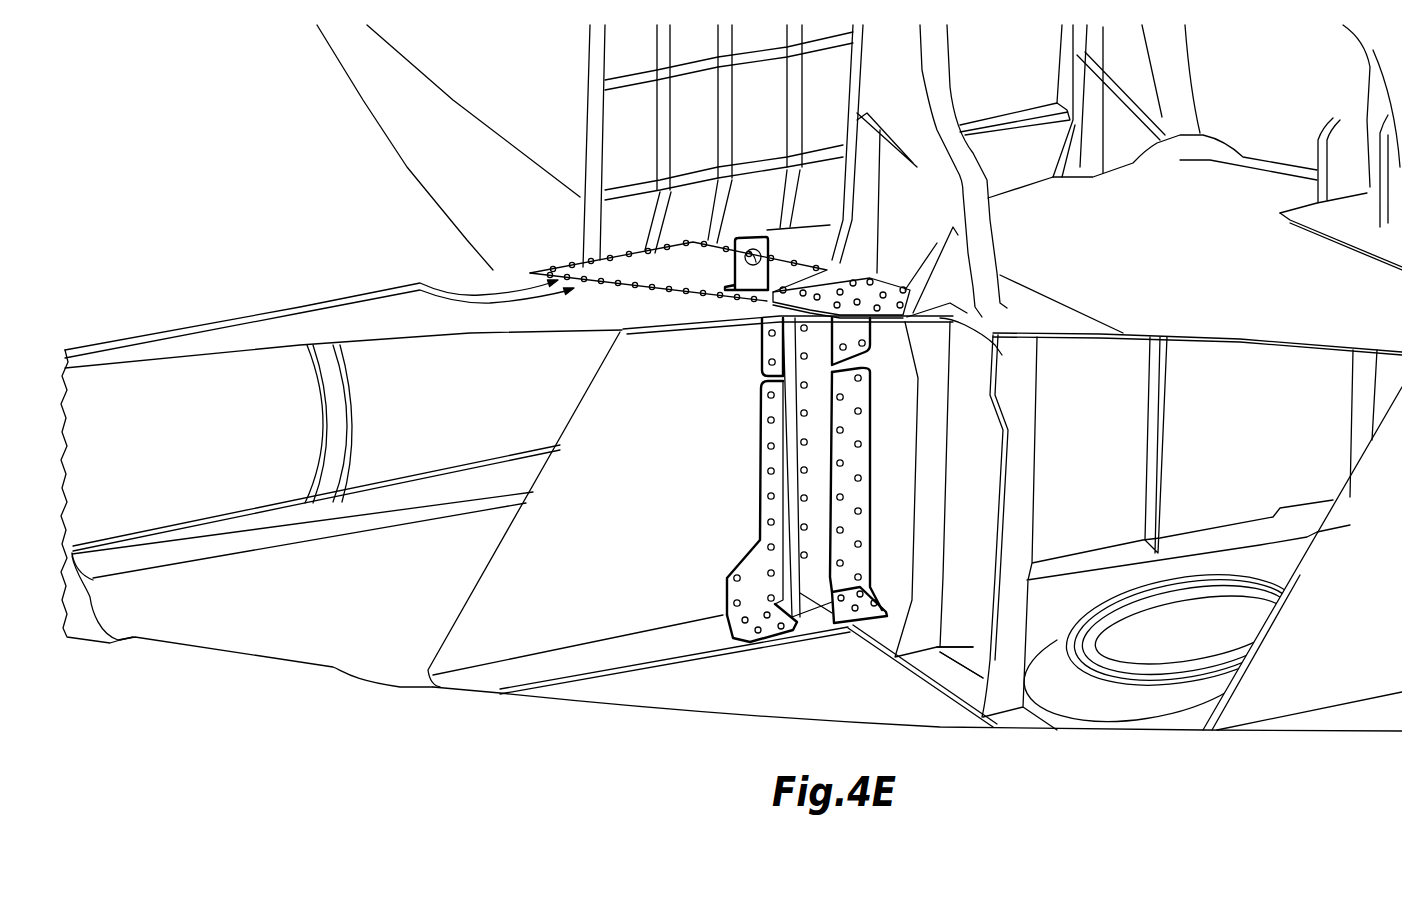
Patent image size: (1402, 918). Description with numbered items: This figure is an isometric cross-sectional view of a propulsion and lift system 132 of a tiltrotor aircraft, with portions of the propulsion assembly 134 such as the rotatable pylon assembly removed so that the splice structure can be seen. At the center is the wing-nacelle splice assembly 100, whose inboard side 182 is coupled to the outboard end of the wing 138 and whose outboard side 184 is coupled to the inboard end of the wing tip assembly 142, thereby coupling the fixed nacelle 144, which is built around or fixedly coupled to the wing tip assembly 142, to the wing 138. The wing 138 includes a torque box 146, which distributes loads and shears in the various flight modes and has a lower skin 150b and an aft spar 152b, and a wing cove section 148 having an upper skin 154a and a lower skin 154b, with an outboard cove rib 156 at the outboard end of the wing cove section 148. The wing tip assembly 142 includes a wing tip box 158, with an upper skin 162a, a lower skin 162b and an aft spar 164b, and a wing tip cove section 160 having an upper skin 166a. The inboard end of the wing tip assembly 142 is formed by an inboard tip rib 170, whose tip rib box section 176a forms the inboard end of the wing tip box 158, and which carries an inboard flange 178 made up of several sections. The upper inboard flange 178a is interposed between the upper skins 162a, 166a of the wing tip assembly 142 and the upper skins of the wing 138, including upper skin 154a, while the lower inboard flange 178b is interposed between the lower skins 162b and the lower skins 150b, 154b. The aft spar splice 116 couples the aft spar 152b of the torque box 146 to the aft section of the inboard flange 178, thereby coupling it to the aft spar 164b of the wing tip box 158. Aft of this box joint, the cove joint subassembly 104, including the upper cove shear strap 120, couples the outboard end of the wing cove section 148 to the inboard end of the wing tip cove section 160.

The wing-nacelle splice assembly 100 is at (530, 273).
The cove joint subassembly 104 is at (440, 287).
The aft spar splice 116 is at (757, 420).
The upper cove shear strap 120 is at (620, 287).
The propulsion and lift system 132 is at (188, 192).
The propulsion assembly 134 is at (320, 46).
The wing 138 is at (115, 356).
The wing tip assembly 142 is at (1253, 178).
The fixed nacelle 144 is at (358, 92).
The torque box 146 is at (642, 694).
The wing cove section 148 is at (168, 345).
The lower skin 150b is at (641, 654).
The aft spar 152b is at (690, 501).
The upper skin 154a is at (220, 337).
The lower skin 154b is at (310, 518).
The outboard cove rib 156 is at (553, 360).
The wing tip box 158 is at (1313, 732).
The wing tip cove section 160 is at (1037, 200).
The upper skin 162a is at (1232, 340).
The lower skin 162b is at (1135, 733).
The aft spar 164b is at (1180, 533).
The upper skin 166a is at (1200, 170).
The inboard tip rib 170 is at (947, 656).
The tip rib box section 176a is at (951, 519).
The inboard flange 178 is at (962, 713).
The upper inboard flange 178a is at (965, 330).
The lower inboard flange 178b is at (925, 674).
The inboard side 182 is at (757, 488).
The outboard side 184 is at (870, 432).